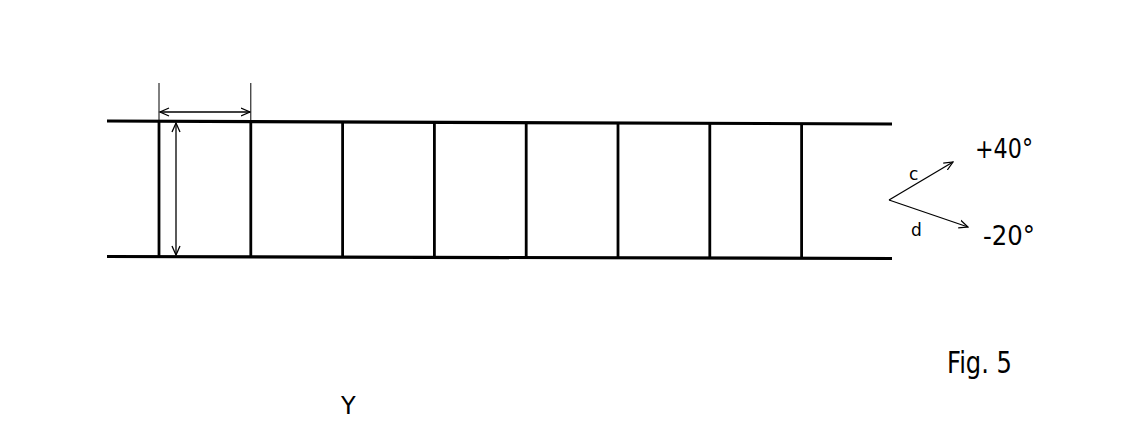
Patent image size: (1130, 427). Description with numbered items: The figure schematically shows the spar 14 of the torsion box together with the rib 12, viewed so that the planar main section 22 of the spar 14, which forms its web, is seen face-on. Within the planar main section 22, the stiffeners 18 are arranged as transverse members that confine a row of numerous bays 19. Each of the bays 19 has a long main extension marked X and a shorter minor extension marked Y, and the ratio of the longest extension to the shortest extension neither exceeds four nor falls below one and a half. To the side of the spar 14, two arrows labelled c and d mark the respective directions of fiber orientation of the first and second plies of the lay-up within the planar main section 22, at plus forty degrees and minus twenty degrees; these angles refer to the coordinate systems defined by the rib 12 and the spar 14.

The rib 12 is at (623, 426).
The spar 14 is at (633, 98).
The stiffeners 18 is at (159, 258).
The bays 19 is at (212, 258).
The planar main section 22 is at (275, 284).